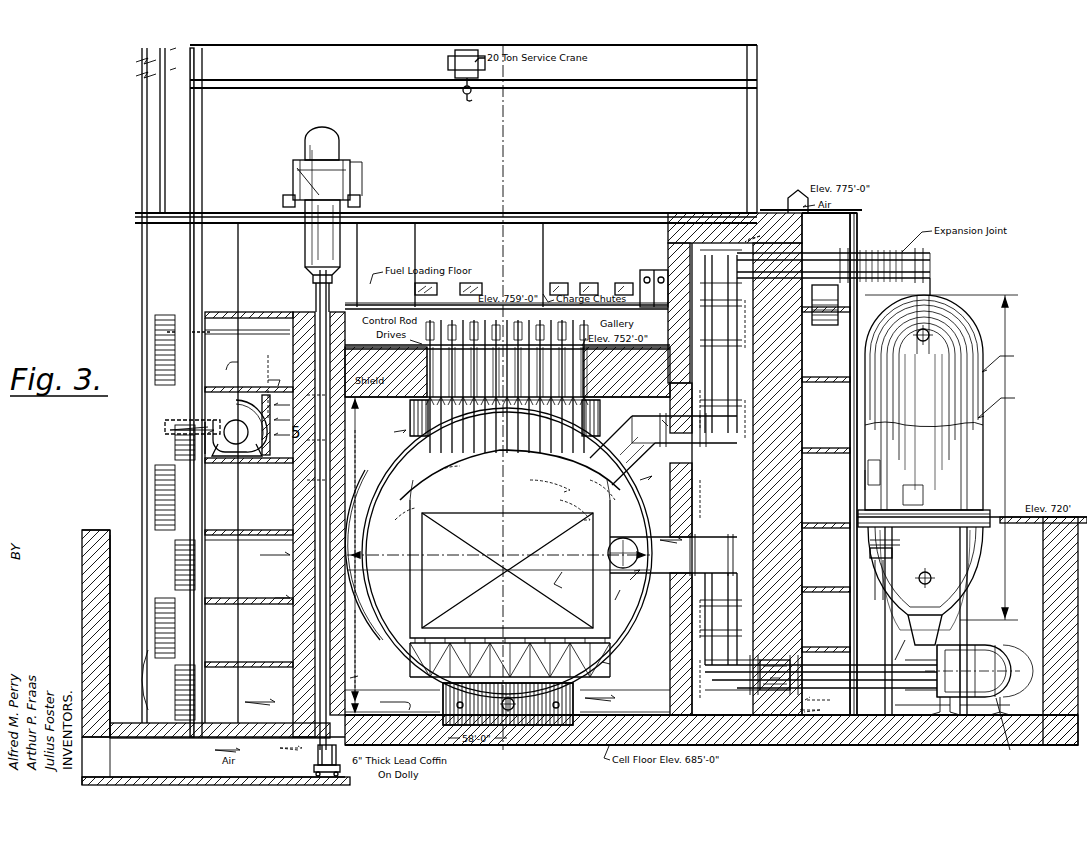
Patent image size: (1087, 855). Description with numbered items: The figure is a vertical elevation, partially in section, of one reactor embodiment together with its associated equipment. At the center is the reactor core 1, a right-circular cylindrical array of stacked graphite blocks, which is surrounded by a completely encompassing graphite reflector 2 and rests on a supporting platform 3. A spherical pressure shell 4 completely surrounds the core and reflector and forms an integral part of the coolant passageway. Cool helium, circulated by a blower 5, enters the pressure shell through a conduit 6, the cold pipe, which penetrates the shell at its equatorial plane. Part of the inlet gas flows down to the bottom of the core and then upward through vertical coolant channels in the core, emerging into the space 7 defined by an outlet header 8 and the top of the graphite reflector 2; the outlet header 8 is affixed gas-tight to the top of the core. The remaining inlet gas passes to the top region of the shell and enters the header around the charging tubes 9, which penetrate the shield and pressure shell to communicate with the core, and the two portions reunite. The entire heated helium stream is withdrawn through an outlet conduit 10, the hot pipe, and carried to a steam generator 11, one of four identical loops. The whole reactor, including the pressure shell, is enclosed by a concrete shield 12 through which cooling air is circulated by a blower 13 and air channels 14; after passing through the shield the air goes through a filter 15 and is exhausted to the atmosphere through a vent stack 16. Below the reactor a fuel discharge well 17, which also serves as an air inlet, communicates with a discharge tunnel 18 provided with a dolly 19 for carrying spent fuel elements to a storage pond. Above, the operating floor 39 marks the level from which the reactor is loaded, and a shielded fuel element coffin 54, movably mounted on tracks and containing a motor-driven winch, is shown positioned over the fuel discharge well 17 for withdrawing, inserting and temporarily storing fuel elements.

The reactor core 1 is at (468, 589).
The graphite reflector 2 is at (418, 585).
The platform 3 is at (530, 672).
The spherical pressure shell 4 is at (397, 624).
The blower 5 is at (1000, 653).
The conduit (cold pipe) 6 is at (639, 541).
The space 7 is at (497, 495).
The outlet header 8 is at (410, 466).
The charging tubes 9 is at (470, 452).
The outlet conduit (hot pipe) 10 is at (640, 456).
The steam generator 11 is at (985, 470).
The concrete shield 12 is at (395, 315).
The blower 13 is at (215, 378).
The air channels 14 is at (306, 310).
The filter 15 is at (264, 457).
The vent stack 16 is at (146, 132).
The fuel discharge well 17 is at (300, 608).
The discharge tunnel 18 is at (164, 769).
The dolly 19 is at (316, 760).
The operating floor 39 is at (450, 261).
The shielded fuel element coffin 54 is at (348, 165).